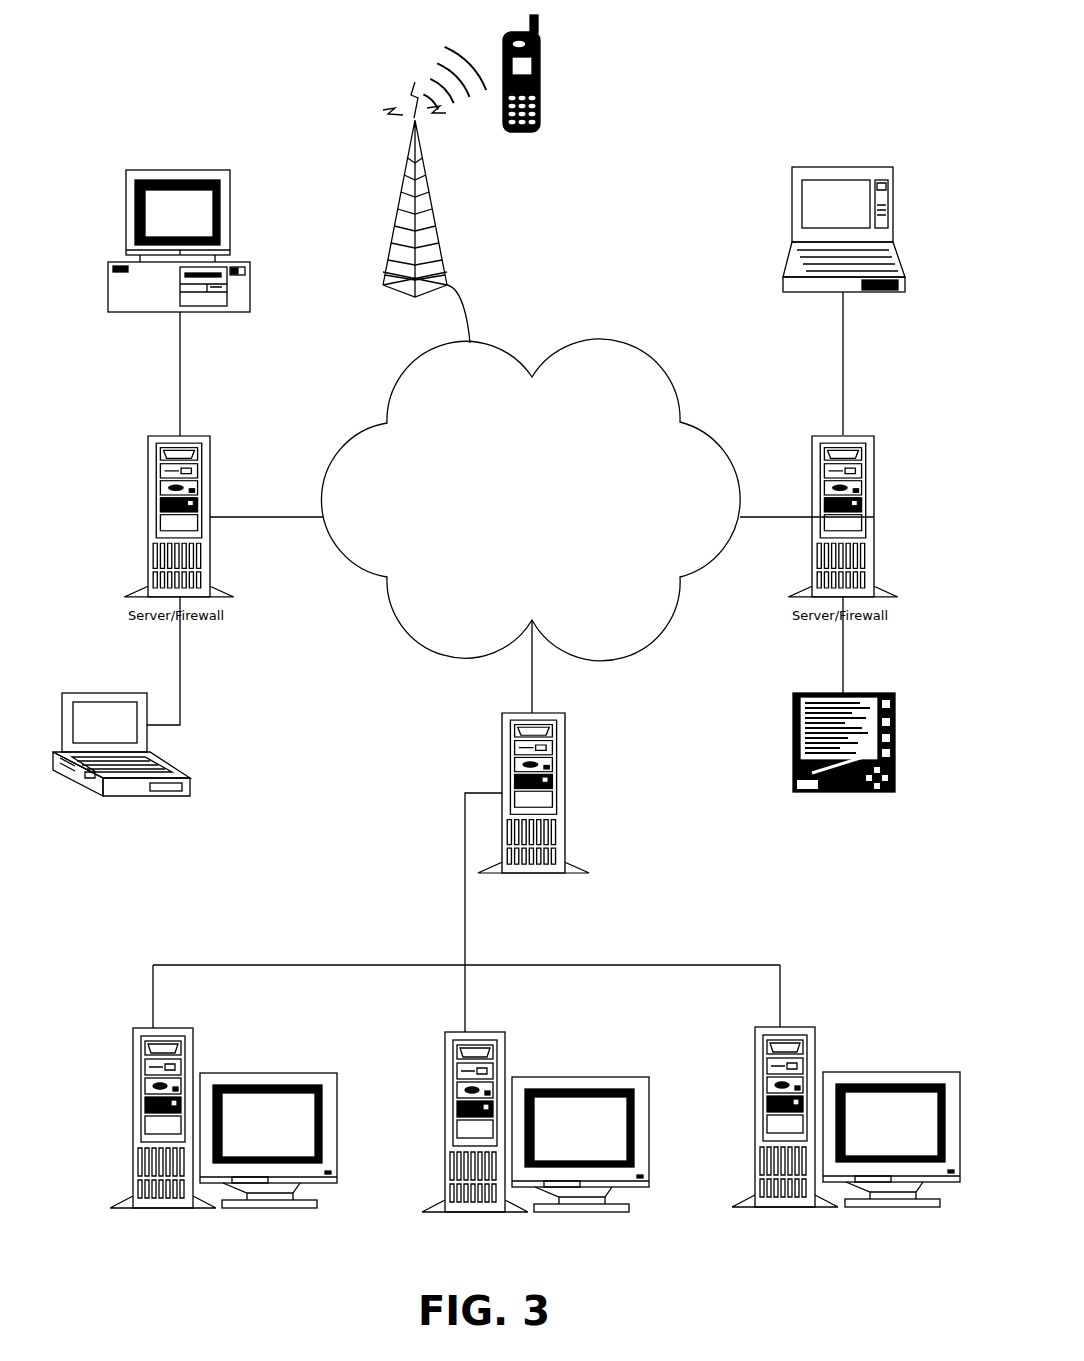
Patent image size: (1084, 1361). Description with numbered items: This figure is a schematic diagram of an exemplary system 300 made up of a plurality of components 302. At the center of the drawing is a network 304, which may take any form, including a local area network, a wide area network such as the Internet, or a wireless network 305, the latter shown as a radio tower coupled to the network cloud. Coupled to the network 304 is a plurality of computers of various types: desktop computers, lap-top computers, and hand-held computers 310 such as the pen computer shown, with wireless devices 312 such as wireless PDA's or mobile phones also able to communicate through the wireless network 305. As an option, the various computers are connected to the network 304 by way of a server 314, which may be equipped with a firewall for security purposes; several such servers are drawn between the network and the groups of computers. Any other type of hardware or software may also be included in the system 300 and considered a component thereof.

The system 300 is at (785, 105).
The components 302 is at (350, 843).
The network 304 is at (585, 342).
The wireless network 305 is at (402, 190).
The hand-held computers 310 is at (793, 742).
The wireless devices 312 is at (540, 62).
The server 314 is at (565, 793).